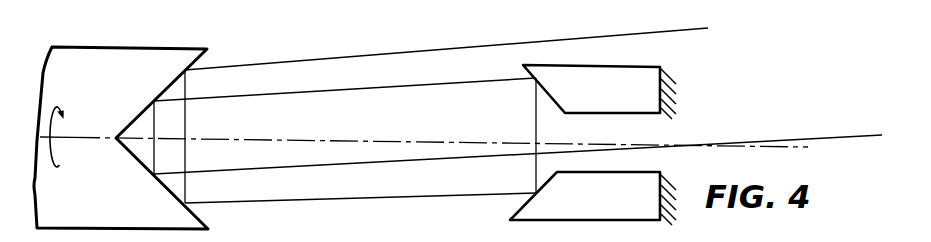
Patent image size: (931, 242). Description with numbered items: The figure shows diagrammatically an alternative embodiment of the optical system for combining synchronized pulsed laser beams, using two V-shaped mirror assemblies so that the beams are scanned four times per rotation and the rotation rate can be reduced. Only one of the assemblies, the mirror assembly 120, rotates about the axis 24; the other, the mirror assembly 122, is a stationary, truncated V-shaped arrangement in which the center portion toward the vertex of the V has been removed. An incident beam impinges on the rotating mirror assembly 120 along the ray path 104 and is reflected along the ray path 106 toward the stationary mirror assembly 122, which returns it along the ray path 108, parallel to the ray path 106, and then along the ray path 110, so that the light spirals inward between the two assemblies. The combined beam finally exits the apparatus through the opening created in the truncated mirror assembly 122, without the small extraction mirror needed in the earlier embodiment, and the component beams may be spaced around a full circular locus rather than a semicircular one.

The axis 24 is at (416, 141).
The ray path 104 is at (327, 57).
The ray path 106 is at (430, 197).
The ray path 108 is at (370, 89).
The ray path 110 is at (232, 170).
The mirror assembly 120 is at (140, 126).
The mirror assembly 122 is at (528, 188).